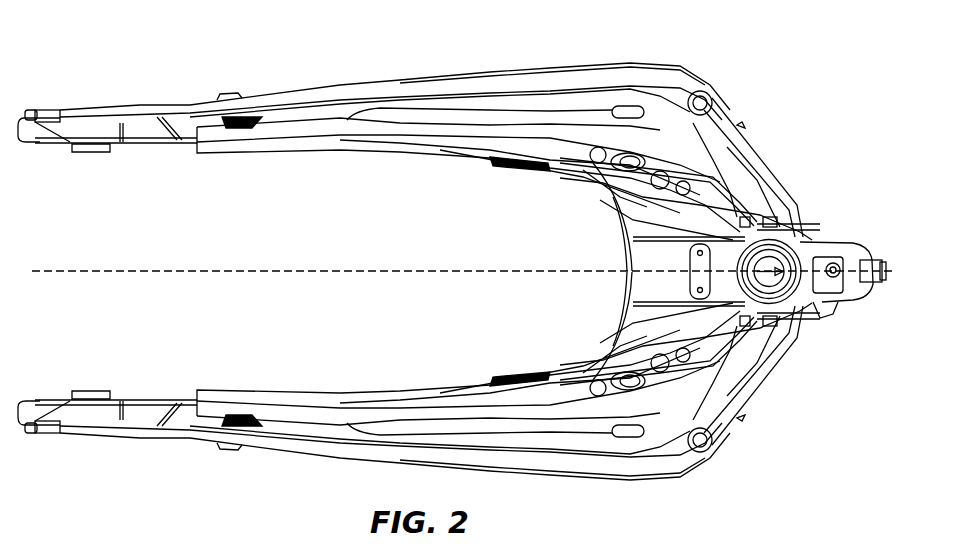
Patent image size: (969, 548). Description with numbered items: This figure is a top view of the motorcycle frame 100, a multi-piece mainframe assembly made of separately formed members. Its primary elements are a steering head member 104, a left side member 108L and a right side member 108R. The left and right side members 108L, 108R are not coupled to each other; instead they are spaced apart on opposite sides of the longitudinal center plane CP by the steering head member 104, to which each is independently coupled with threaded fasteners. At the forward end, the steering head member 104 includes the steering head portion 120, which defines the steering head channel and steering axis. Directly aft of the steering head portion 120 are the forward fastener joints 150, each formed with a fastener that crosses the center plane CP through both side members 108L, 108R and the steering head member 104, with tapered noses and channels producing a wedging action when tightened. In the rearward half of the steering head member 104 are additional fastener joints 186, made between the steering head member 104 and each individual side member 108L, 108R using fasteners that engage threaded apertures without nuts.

The motorcycle frame 100 is at (455, 280).
The steering head member 104 is at (641, 257).
The left side member 108L is at (292, 150).
The right side member 108R is at (293, 395).
The steering head portion 120 is at (808, 256).
The fastener joints 150 is at (775, 188).
The additional fastener joints 186 is at (700, 92).
The longitudinal center plane CP is at (147, 268).